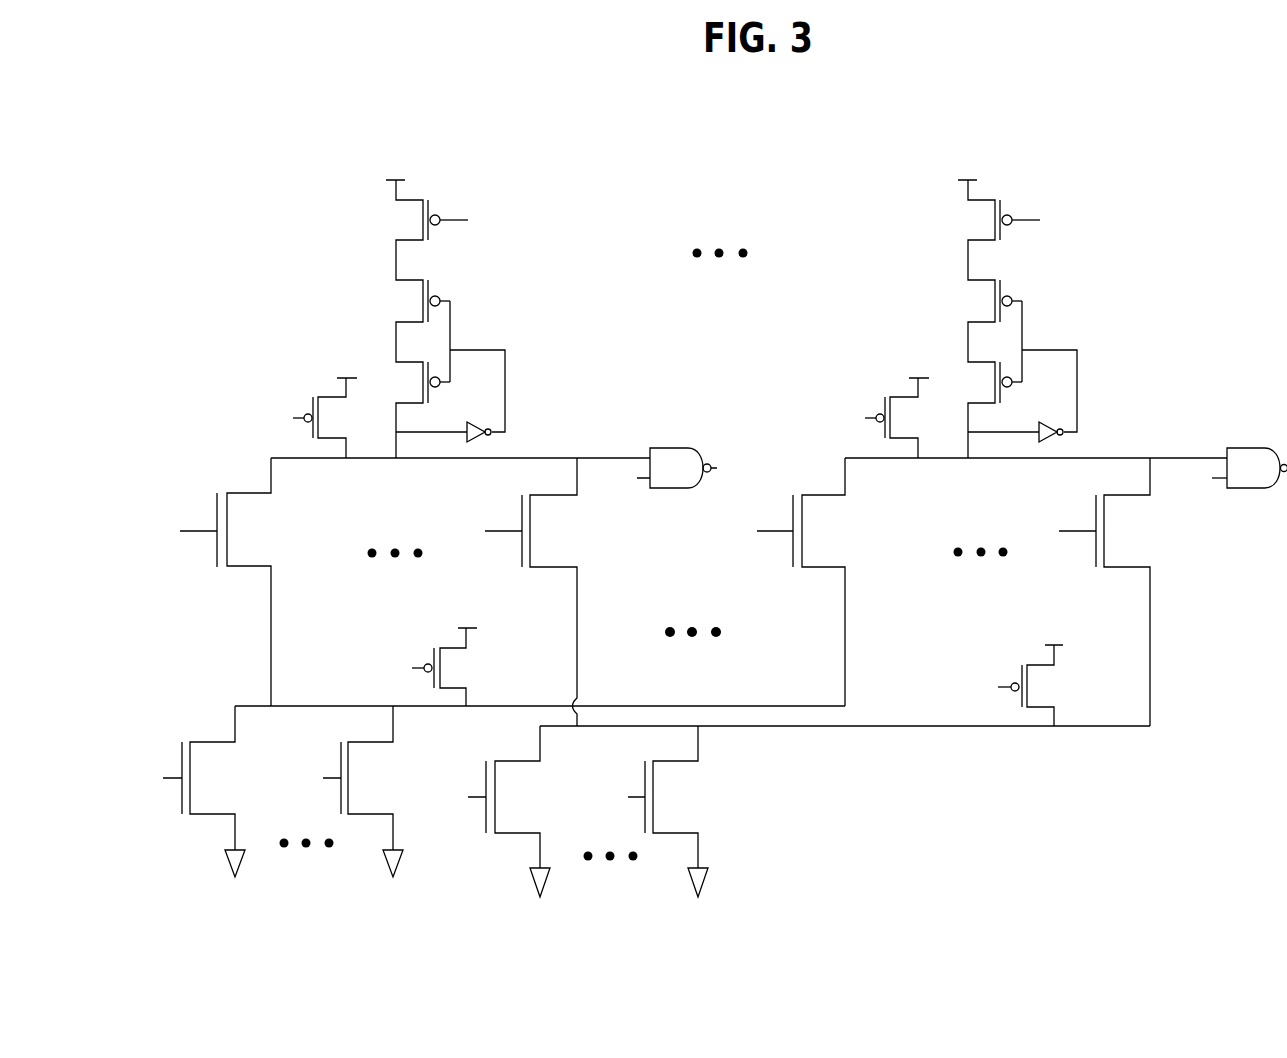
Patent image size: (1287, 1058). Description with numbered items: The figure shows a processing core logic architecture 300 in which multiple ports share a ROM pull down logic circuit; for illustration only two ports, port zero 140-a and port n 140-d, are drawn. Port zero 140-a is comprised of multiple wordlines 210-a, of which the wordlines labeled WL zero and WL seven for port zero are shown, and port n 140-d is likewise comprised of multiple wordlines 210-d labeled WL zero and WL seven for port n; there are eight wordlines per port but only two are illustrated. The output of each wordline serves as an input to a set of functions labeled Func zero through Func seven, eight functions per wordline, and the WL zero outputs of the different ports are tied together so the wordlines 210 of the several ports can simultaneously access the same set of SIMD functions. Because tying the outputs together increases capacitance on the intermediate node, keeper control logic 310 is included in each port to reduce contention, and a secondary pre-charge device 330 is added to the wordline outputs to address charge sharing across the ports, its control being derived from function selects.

The processing core logic architecture 300 is at (777, 108).
The port 0 140-a is at (305, 233).
The port n 140-d is at (1147, 288).
The keeper control logic 310 is at (455, 203).
The wordlines of port 0 210-a is at (203, 552).
The wordlines of port n 210-d is at (773, 548).
The secondary pre-charge device 330 is at (413, 648).
The wordlines 210 is at (757, 898).